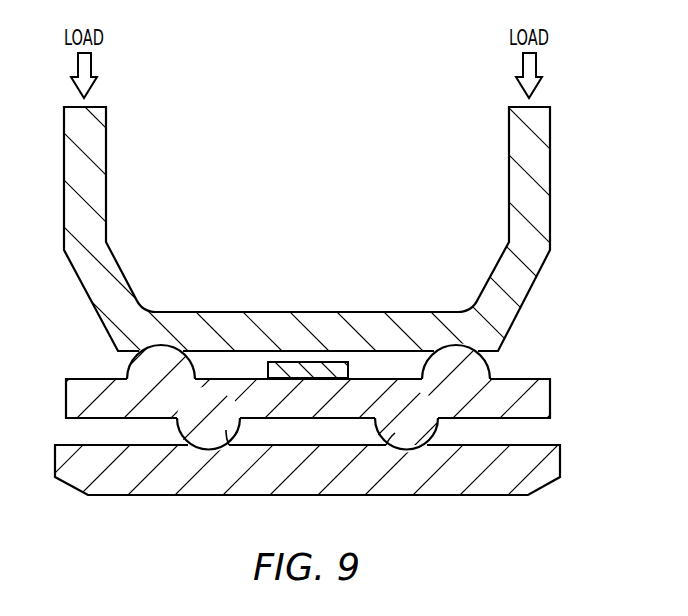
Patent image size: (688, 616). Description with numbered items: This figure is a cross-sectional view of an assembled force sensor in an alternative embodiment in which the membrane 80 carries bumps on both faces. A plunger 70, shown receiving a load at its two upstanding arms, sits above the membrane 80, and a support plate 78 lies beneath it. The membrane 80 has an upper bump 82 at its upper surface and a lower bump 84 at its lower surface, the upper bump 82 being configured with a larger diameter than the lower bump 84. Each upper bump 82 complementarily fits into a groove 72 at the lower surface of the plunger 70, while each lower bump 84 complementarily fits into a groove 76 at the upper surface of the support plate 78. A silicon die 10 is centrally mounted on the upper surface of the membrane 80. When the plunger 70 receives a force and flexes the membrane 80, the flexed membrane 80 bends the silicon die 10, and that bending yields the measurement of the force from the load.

The silicon die 10 is at (293, 368).
The plunger 70 is at (550, 167).
The groove 72 is at (158, 340).
The groove 76 is at (208, 455).
The support plate 78 is at (108, 497).
The membrane 80 is at (65, 399).
The upper bump 82 is at (148, 368).
The lower bump 84 is at (225, 430).